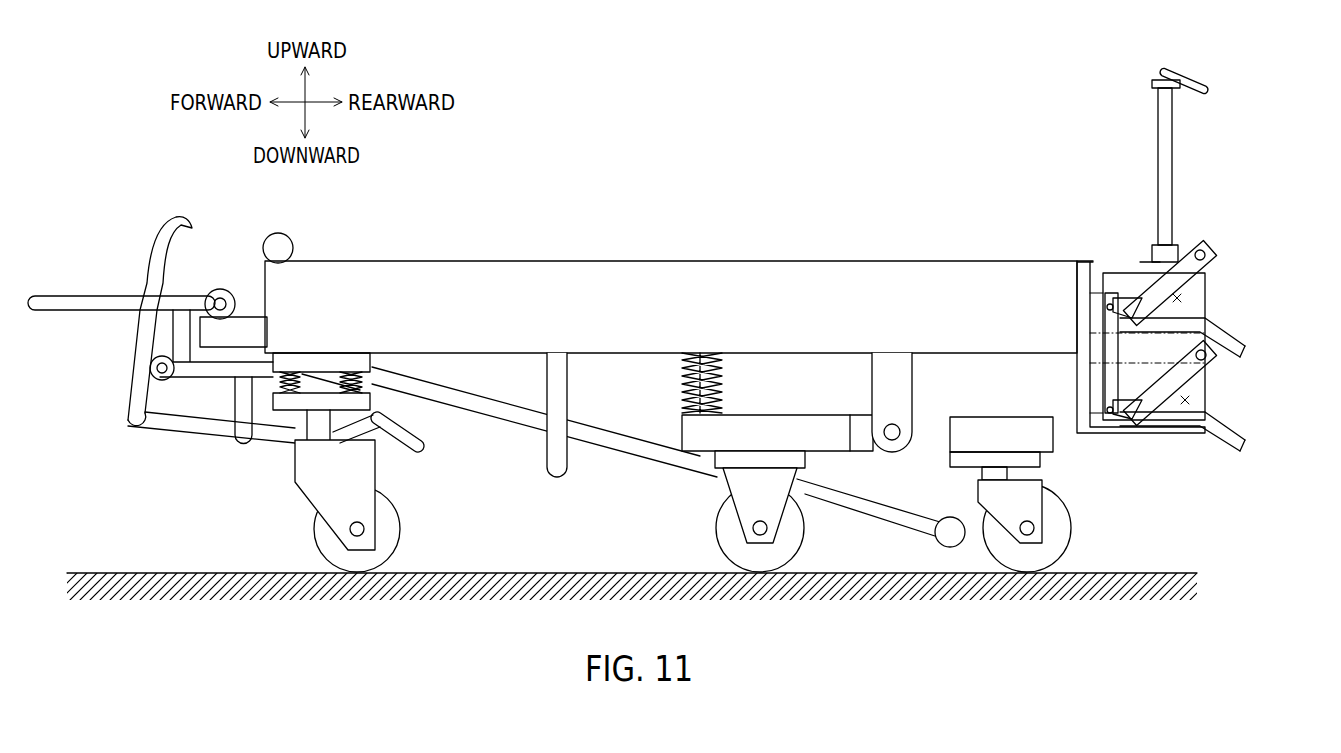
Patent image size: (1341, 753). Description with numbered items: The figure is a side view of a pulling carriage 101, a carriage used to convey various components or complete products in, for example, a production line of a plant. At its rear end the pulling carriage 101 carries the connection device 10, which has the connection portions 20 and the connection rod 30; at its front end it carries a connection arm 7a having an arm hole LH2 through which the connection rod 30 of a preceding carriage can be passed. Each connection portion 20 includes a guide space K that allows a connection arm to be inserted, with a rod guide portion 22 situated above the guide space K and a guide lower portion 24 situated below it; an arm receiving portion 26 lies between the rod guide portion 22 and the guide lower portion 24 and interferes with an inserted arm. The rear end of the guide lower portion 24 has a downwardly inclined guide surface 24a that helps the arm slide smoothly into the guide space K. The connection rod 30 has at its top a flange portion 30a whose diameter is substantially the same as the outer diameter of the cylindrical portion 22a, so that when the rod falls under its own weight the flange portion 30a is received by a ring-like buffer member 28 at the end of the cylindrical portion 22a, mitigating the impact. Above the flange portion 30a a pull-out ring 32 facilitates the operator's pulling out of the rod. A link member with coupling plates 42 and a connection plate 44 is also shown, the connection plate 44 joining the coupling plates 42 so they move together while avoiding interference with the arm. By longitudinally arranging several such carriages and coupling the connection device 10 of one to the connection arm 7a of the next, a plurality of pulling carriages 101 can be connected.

The pulling carriage 101 is at (567, 226).
The arm hole LH2 is at (48, 300).
The connection arm 7a is at (108, 300).
The connection device 10 is at (1229, 222).
The rod guide portion 22 is at (1090, 253).
The cylindrical portion 22a is at (1150, 255).
The connection rod 30 is at (1163, 135).
The flange portion 30a is at (1152, 84).
The pull-out ring 32 is at (1190, 78).
The buffer member 28 is at (1155, 250).
The arm receiving portion 26 is at (1185, 258).
The connection portion 20 is at (1225, 280).
The coupling plate 42 is at (1110, 300).
The connection plate 44 is at (1105, 380).
The guide lower portion 24 is at (1210, 321).
The guide surface 24a is at (1245, 340).
The guide space K is at (1185, 299).